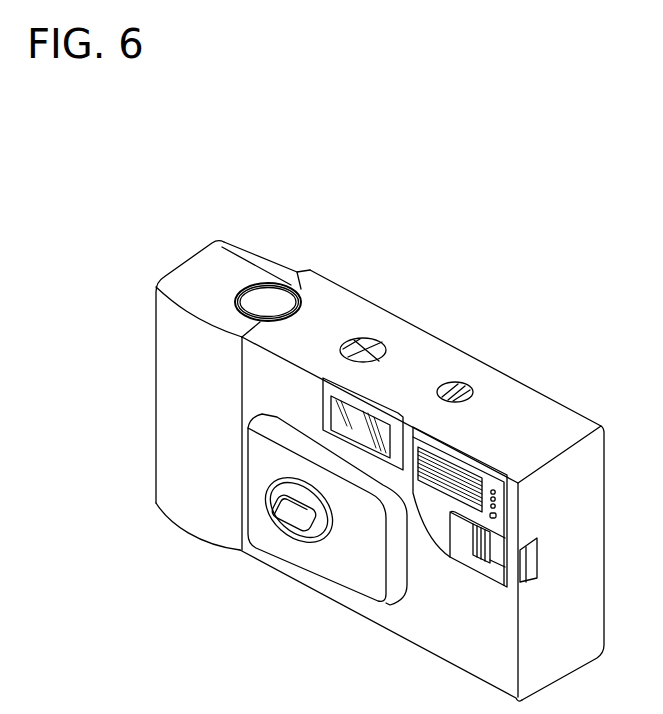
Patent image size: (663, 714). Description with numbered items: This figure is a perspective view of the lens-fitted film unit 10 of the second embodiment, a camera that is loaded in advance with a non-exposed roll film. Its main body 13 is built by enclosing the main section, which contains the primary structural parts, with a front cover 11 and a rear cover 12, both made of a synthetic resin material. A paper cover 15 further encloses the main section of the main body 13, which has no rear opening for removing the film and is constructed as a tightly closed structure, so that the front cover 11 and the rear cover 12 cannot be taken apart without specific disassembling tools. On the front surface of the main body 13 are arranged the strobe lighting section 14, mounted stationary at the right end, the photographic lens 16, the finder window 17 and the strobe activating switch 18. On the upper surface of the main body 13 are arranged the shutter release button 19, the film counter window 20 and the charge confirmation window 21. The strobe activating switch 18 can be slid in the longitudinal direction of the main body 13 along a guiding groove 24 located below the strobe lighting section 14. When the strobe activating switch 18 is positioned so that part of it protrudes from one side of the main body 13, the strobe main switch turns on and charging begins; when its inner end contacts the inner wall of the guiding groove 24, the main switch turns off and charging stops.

The lens-fitted film unit 10 is at (441, 224).
The front cover 11 is at (195, 257).
The rear cover 12 is at (230, 243).
The main body 13 is at (239, 161).
The strobe lighting section 14 is at (462, 464).
The paper cover 15 is at (547, 405).
The photographic lens 16 is at (300, 520).
The finder window 17 is at (362, 415).
The strobe activating switch 18 is at (458, 540).
The shutter release button 19 is at (282, 297).
The film counter window 20 is at (363, 340).
The charge confirmation window 21 is at (458, 382).
The guiding groove 24 is at (501, 568).